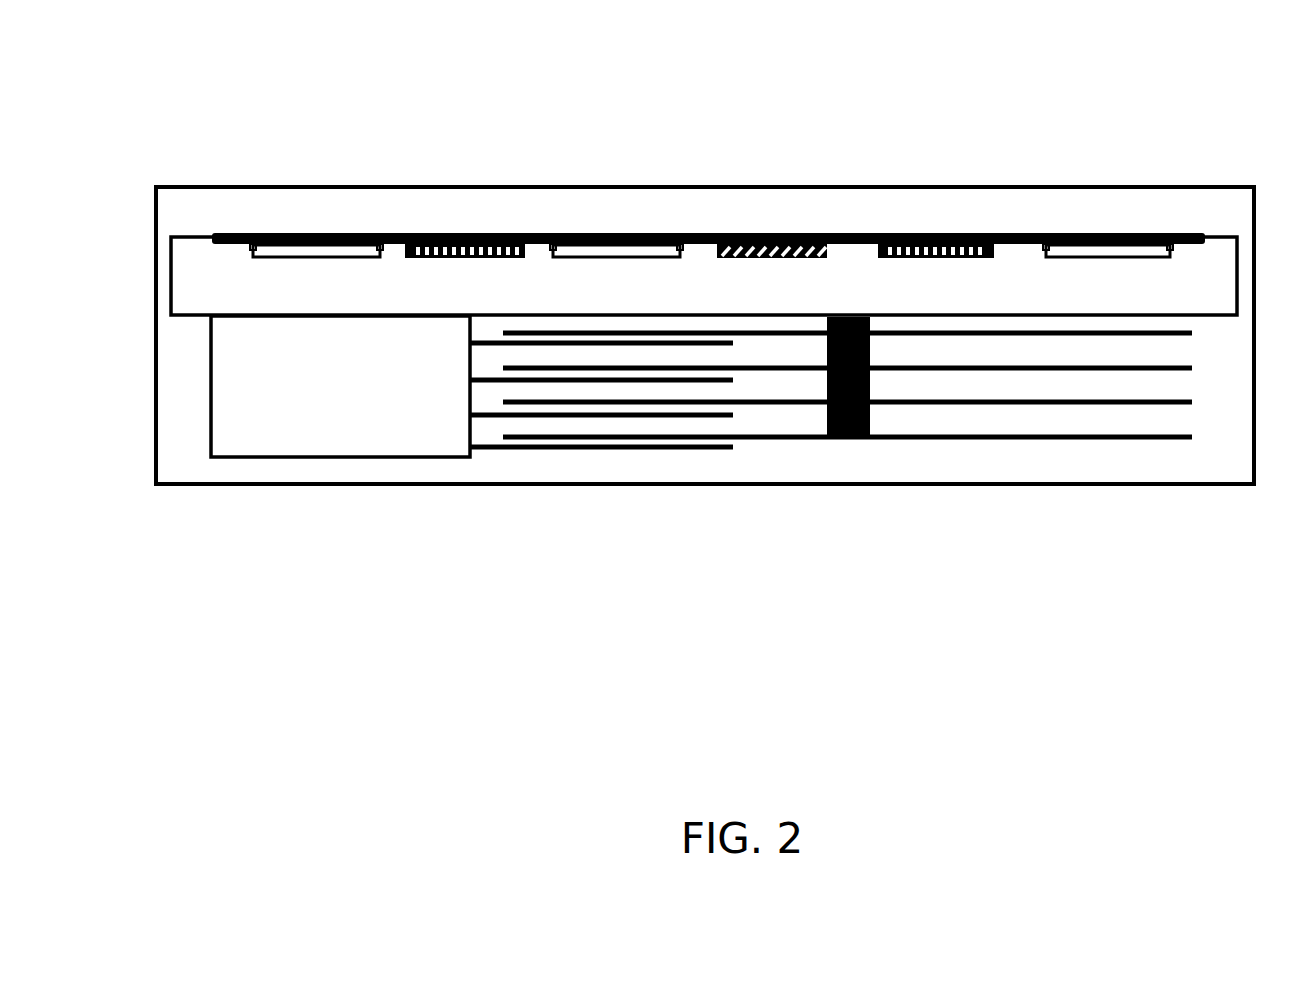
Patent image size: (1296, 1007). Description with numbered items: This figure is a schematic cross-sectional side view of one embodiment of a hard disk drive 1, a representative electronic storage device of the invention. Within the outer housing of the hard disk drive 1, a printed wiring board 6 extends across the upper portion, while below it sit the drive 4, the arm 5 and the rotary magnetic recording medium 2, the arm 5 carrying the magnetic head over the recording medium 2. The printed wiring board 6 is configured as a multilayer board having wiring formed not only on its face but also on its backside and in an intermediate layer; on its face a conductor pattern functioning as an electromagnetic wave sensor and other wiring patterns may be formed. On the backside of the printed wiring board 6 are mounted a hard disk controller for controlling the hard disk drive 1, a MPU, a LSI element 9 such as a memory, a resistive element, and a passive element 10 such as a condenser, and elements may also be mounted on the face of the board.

The hard disk drive 1 is at (812, 484).
The rotary magnetic recording medium 2 is at (1125, 443).
The drive 4 is at (295, 438).
The arm 5 is at (585, 448).
The printed wiring board 6 is at (1020, 234).
The LSI element 9 is at (944, 258).
The passive element 10 is at (657, 258).